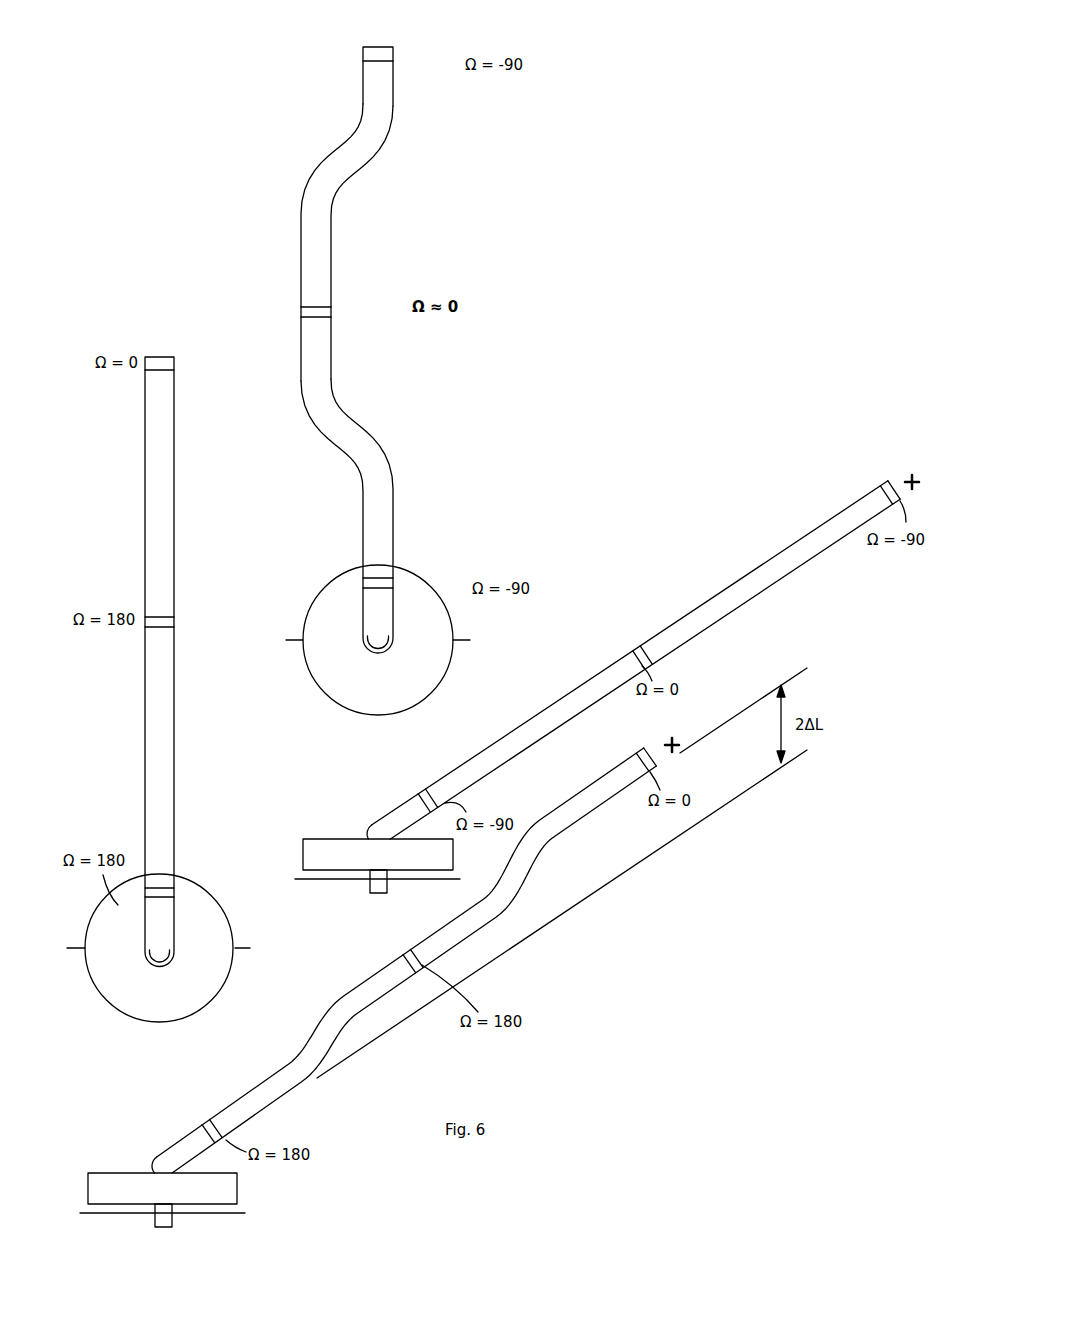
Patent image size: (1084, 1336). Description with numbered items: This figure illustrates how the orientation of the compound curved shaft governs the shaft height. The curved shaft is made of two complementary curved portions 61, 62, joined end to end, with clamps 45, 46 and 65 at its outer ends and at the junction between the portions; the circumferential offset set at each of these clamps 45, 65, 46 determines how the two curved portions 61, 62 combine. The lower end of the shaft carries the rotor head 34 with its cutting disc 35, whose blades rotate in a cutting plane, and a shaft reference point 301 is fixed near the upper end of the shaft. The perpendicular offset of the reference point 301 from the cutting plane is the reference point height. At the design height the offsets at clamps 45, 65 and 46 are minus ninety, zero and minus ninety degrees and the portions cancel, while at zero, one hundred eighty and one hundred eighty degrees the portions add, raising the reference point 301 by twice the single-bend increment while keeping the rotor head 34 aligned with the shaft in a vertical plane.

The clamp 45 is at (176, 364).
The clamp 46 is at (176, 889).
The curved portion 61 is at (146, 455).
The curved portion 62 is at (146, 726).
The clamp 65 is at (176, 620).
The rotor head 34 is at (168, 946).
The cutting disc 35 is at (96, 985).
The shaft reference point 301 is at (792, 613).